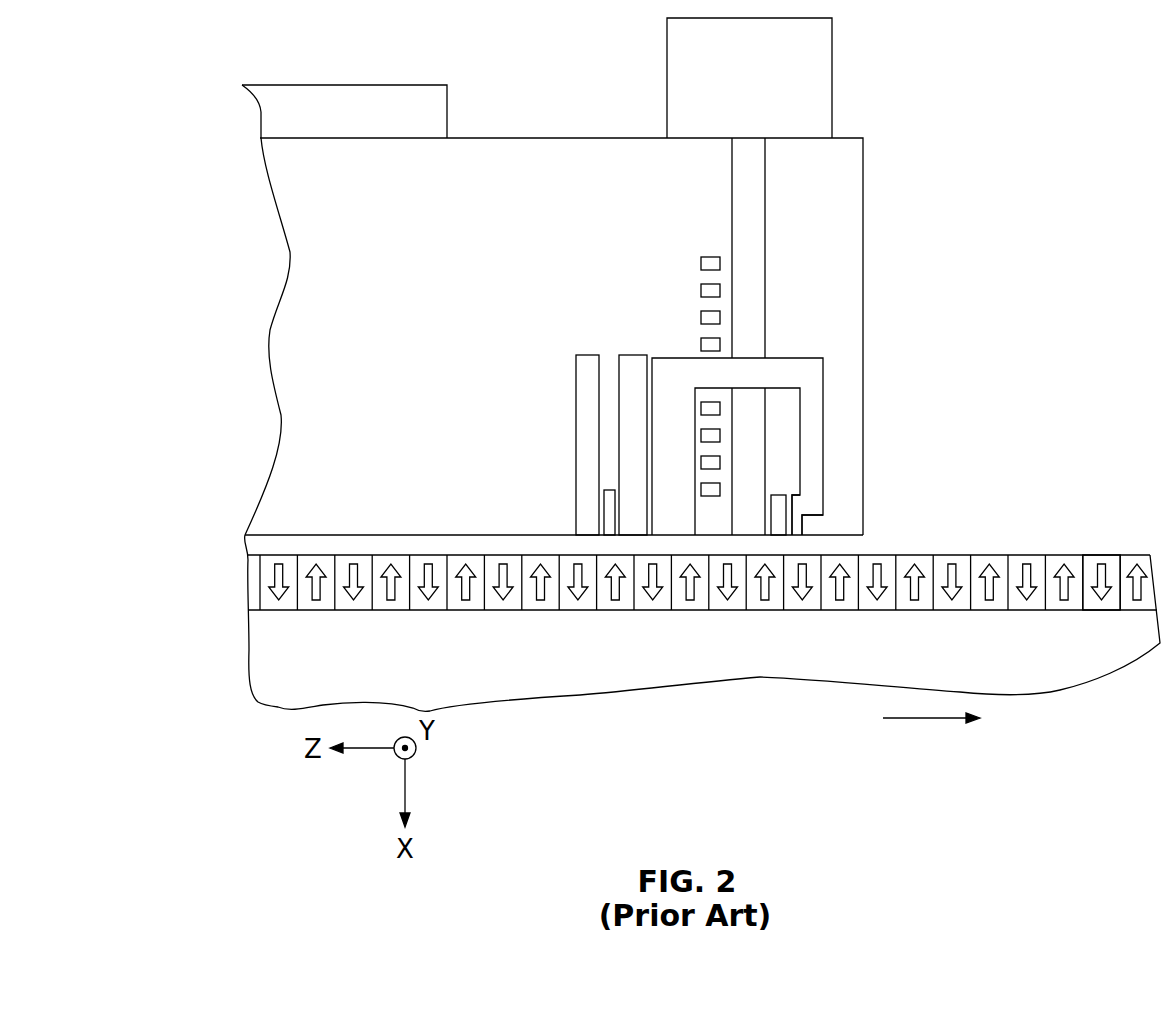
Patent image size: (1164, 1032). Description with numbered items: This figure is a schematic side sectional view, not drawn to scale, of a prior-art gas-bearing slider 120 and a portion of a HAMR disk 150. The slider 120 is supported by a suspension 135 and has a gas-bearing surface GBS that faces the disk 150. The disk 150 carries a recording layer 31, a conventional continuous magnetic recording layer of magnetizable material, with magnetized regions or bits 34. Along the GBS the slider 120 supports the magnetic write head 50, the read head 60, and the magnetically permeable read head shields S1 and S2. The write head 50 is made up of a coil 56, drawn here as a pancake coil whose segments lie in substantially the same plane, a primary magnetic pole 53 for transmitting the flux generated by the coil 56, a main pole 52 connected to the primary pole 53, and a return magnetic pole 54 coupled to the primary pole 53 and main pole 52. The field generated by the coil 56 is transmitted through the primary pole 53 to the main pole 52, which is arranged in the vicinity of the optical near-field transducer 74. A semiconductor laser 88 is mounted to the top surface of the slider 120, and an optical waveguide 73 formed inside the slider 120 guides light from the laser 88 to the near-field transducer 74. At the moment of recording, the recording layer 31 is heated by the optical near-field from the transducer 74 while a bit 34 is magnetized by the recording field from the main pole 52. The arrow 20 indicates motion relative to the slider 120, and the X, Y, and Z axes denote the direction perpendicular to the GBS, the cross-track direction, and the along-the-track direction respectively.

The gas-bearing slider 120 is at (292, 417).
The suspension 135 is at (372, 103).
The semiconductor laser 88 is at (818, 78).
The gas-bearing surface GBS is at (842, 535).
The optical waveguide 73 is at (745, 297).
The primary magnetic pole 53 is at (813, 407).
The return magnetic pole 54 is at (675, 368).
The main pole 52 is at (805, 527).
The coil 56 is at (700, 263).
The magnetic write head 50 is at (666, 287).
The optical near-field transducer 74 is at (777, 493).
The read head shield S1 is at (590, 446).
The read head shield S2 is at (633, 353).
The read head 60 is at (605, 518).
The recording layer 31 is at (228, 548).
The bit 34 is at (1100, 570).
The disk 150 is at (1028, 680).
The medium motion direction 20 is at (916, 718).